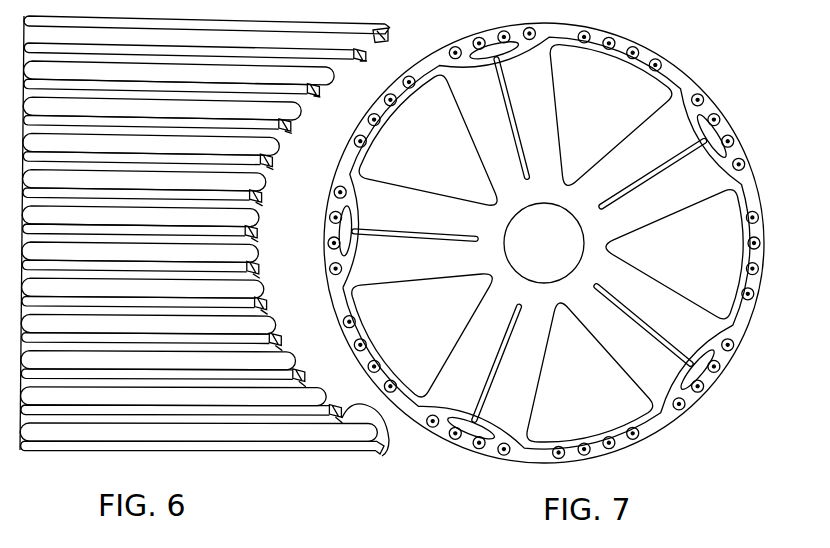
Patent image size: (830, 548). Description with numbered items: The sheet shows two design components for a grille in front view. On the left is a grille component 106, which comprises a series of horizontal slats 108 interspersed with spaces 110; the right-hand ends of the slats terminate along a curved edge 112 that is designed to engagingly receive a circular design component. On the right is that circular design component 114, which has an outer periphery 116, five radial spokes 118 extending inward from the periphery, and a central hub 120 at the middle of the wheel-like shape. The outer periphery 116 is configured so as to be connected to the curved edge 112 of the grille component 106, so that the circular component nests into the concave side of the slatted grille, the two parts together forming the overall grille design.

In FIG. 6, the grille component 106 is at (205, 259).
In FIG. 6, the horizontal slats 108 is at (253, 413).
In FIG. 6, the spaces 110 is at (235, 440).
In FIG. 6, the curved edge 112 is at (384, 453).
In FIG. 7, the circular design component 114 is at (658, 393).
In FIG. 7, the outer periphery 116 is at (625, 448).
In FIG. 7, the radial spokes 118 is at (700, 322).
In FIG. 7, the central hub 120 is at (582, 251).